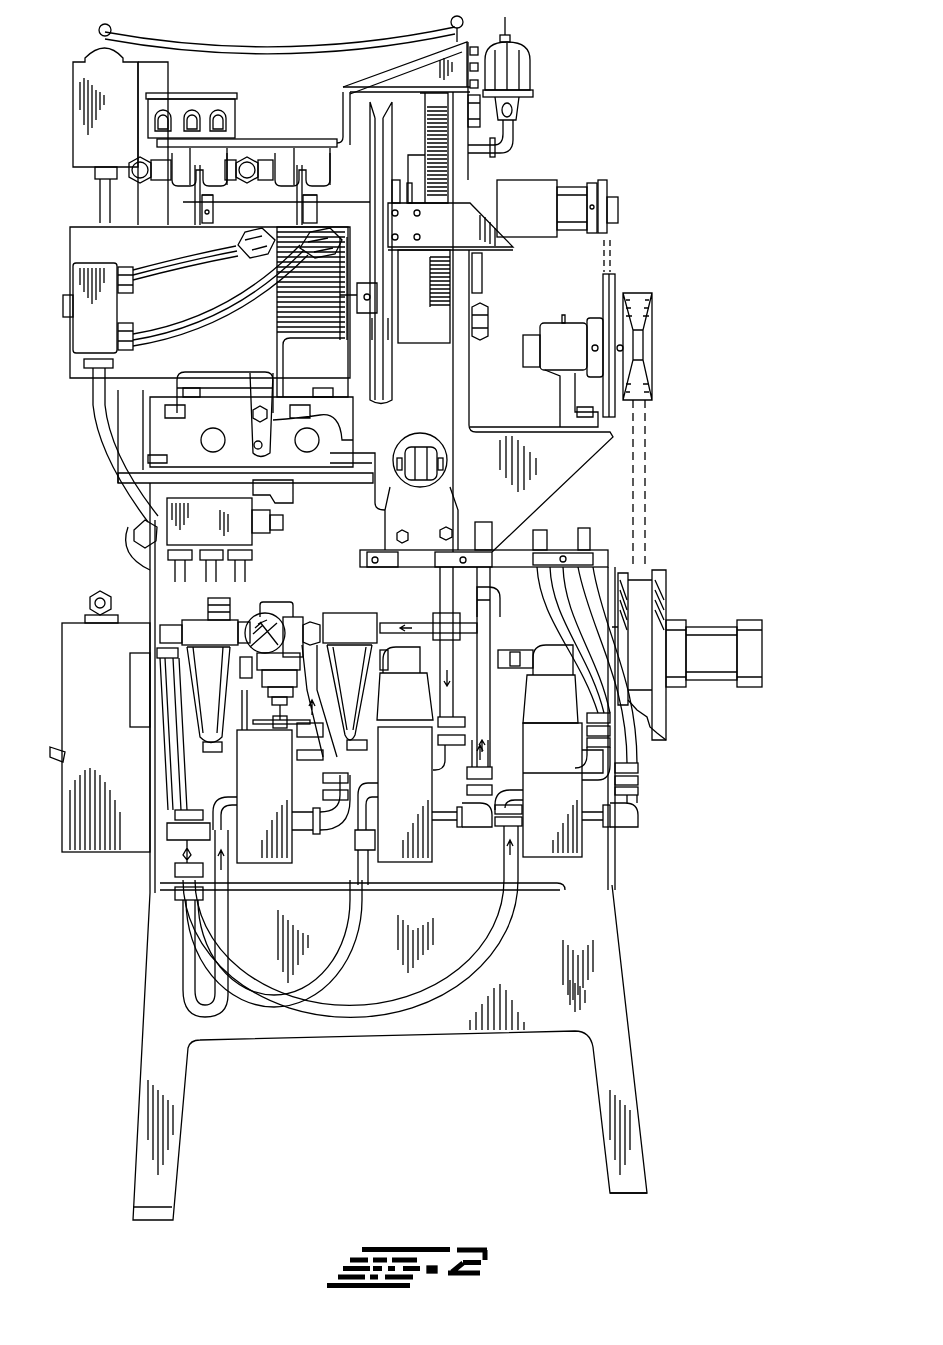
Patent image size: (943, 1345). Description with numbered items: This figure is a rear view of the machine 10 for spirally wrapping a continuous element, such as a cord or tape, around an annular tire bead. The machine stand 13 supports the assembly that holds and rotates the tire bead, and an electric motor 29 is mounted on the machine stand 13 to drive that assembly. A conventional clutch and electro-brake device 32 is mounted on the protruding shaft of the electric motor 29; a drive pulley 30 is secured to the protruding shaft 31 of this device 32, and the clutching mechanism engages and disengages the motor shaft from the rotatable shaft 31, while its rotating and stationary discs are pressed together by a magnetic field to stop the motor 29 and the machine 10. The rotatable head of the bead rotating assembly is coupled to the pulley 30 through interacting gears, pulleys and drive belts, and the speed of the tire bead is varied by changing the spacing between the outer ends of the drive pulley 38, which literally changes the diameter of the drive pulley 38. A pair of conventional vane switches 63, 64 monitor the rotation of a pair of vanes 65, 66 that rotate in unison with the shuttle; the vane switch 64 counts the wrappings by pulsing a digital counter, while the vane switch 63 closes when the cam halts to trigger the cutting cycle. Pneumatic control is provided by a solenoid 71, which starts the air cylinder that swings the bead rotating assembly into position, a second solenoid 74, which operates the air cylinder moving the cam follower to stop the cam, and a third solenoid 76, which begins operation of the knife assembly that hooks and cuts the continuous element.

The machine 10 is at (529, 155).
The machine stand 13 is at (627, 972).
The electric motor 29 is at (88, 230).
The drive pulley 30 is at (383, 327).
The protruding shaft 31 is at (350, 312).
The clutch and electro-brake device 32 is at (287, 318).
The drive pulley 38 is at (660, 592).
The vane switch 63 is at (217, 165).
The vane switch 64 is at (282, 167).
The vane 65 is at (207, 186).
The vane 66 is at (303, 187).
The solenoid 71 is at (281, 796).
The second solenoid 74 is at (425, 754).
The third solenoid 76 is at (549, 751).